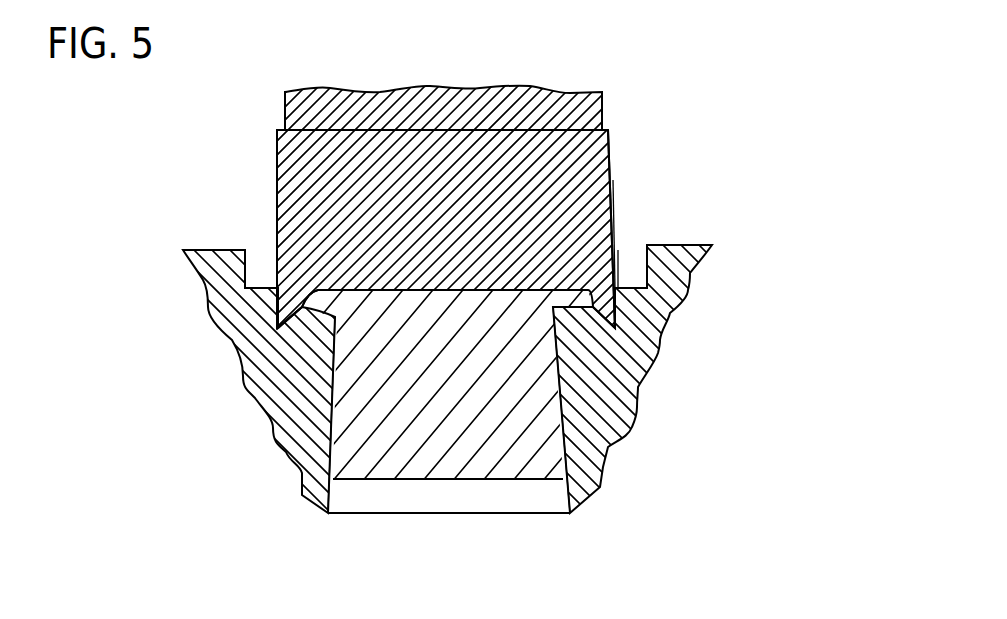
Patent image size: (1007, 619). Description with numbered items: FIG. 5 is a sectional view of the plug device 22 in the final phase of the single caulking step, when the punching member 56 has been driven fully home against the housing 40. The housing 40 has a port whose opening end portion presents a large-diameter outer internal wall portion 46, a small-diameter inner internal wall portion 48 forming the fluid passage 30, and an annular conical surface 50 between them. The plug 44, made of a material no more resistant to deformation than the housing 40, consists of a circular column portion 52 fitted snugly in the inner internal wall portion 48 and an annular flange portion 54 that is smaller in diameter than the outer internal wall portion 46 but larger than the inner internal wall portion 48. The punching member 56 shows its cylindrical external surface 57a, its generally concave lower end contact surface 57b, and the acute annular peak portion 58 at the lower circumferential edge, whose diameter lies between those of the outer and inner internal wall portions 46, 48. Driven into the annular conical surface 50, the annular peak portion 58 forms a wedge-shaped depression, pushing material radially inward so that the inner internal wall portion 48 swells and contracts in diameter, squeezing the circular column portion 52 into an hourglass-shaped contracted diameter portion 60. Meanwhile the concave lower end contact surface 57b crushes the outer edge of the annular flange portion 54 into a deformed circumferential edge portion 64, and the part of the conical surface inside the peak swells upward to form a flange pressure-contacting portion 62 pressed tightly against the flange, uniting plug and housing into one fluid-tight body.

The plug device 22 is at (670, 100).
The fluid passage 30 is at (552, 500).
The housing 40 is at (210, 250).
The plug 44 is at (485, 432).
The outer internal wall portion 46 is at (656, 245).
The inner internal wall portion 48 is at (348, 383).
The annular conical surface 50 is at (640, 250).
The circular column portion 52 is at (357, 433).
The annular flange portion 54 is at (614, 190).
The punching member 56 is at (277, 158).
The cylindrical external surface 57a is at (613, 137).
The concave lower end contact surface 57b is at (305, 312).
The annular peak portion 58 is at (636, 262).
The contracted diameter portion 60 is at (563, 393).
The flange pressure-contacting portion 62 is at (315, 285).
The deformed circumferential edge portion 64 is at (316, 300).